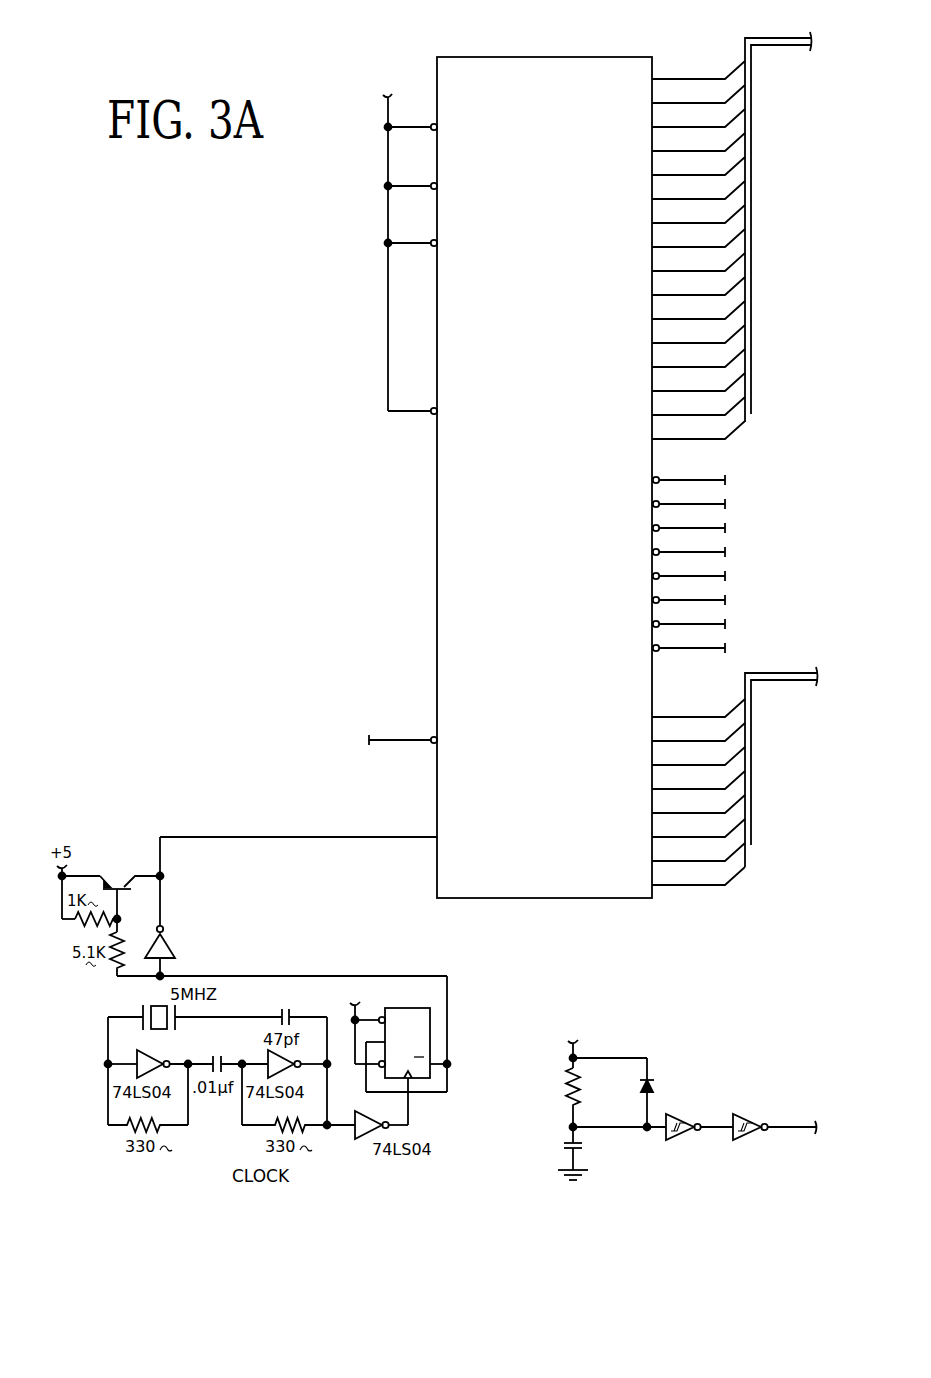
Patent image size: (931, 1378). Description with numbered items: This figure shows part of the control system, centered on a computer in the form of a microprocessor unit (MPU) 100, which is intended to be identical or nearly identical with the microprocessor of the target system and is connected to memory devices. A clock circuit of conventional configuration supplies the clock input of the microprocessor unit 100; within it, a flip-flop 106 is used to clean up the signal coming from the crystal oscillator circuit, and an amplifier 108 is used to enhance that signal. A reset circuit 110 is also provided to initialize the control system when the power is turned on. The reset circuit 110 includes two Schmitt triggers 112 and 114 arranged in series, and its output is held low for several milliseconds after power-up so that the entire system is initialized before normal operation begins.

The microprocessor unit (MPU) 100 is at (437, 622).
The flip-flop 106 is at (410, 1008).
The amplifier 108 is at (170, 942).
The reset circuit 110 is at (666, 1103).
The Schmitt trigger 112 is at (678, 1114).
The Schmitt trigger 114 is at (742, 1114).